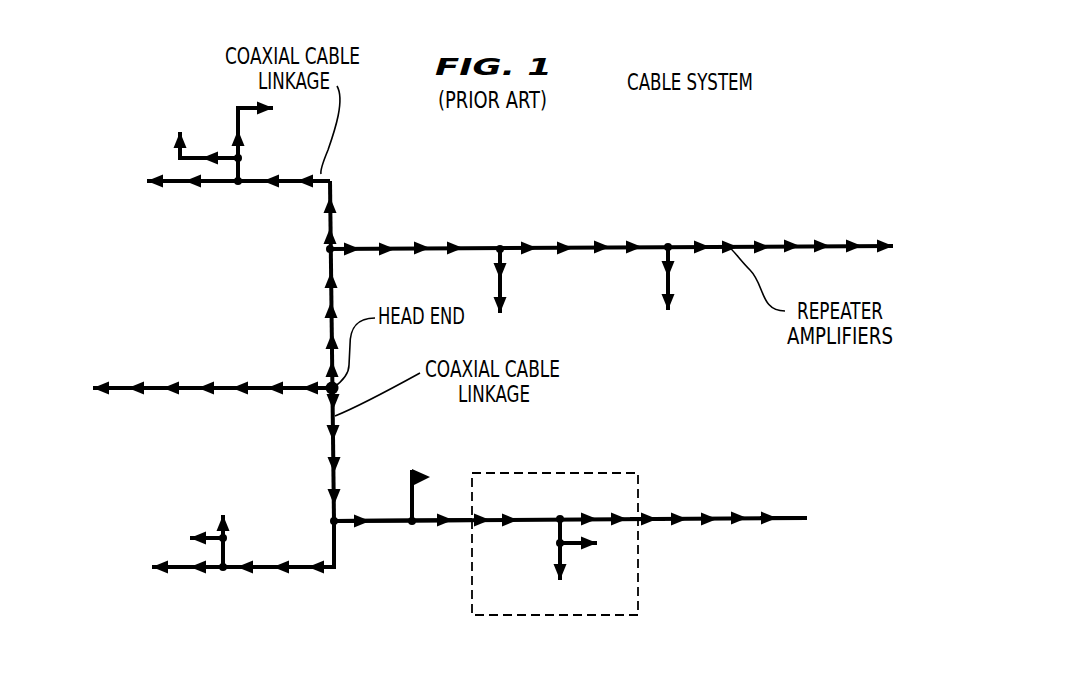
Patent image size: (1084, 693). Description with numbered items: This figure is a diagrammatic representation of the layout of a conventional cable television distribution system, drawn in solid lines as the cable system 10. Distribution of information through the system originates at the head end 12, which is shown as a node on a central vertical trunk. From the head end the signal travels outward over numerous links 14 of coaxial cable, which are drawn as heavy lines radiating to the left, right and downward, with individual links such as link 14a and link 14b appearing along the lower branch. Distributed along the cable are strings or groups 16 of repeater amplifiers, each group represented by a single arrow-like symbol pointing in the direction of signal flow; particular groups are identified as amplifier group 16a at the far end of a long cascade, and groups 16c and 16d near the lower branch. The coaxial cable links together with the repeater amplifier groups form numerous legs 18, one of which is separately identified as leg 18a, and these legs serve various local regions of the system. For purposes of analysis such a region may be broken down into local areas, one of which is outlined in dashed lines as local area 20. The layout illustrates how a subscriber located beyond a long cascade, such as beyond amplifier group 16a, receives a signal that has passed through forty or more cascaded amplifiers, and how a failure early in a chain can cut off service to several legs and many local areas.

The cable system 10 is at (716, 158).
The head end 12 is at (333, 386).
The links of coaxial cable 14 is at (242, 154).
The link of coaxial cable 14a is at (466, 525).
The link of coaxial cable 14b is at (640, 514).
The groups of repeater amplifiers 16 is at (602, 244).
The amplifier group 16a is at (769, 512).
The repeater amplifier group 16c is at (480, 519).
The repeater amplifier group 16d is at (508, 519).
The legs 18 is at (186, 185).
The leg 18a is at (662, 534).
The local area 20 is at (645, 563).